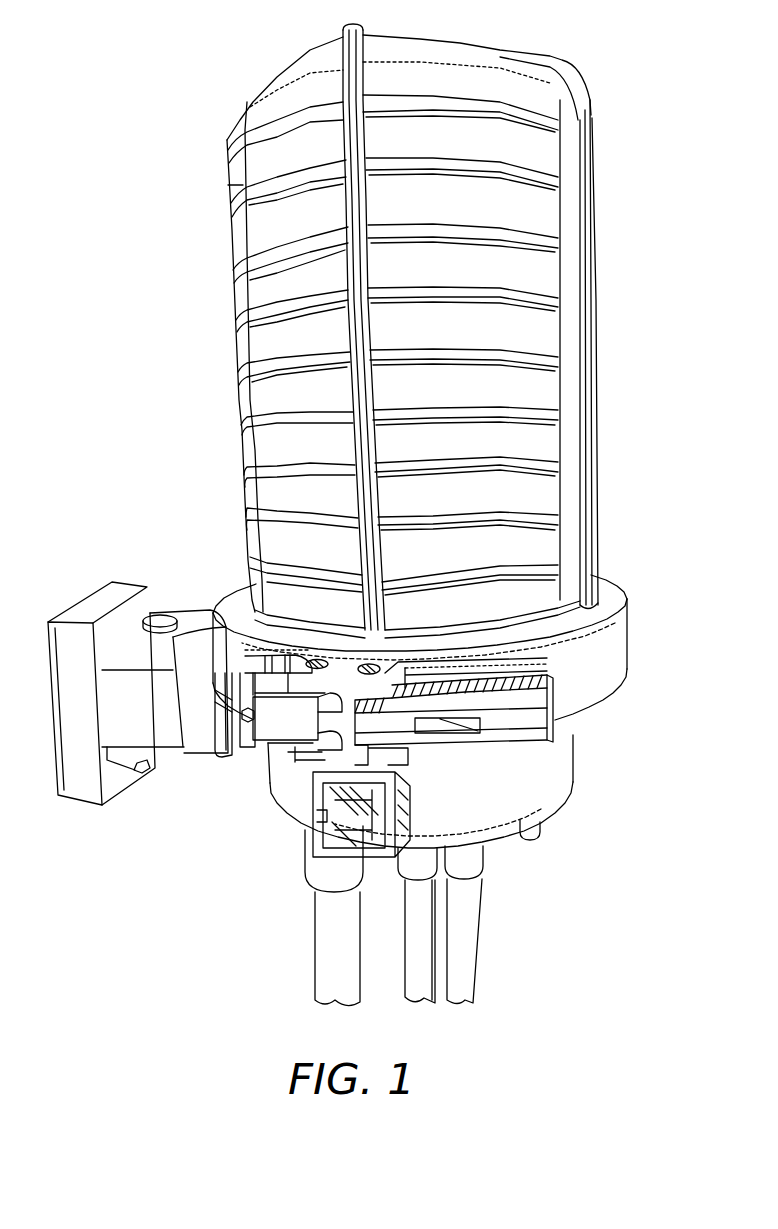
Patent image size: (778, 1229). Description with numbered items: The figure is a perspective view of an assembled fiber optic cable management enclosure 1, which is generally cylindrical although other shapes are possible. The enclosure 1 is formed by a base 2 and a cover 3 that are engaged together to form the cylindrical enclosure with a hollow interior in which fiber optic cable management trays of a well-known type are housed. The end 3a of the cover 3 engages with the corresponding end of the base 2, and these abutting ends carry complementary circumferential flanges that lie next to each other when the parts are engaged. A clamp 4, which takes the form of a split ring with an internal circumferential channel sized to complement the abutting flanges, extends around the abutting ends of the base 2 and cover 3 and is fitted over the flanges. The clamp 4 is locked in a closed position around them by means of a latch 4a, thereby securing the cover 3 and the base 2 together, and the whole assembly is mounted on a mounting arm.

The fiber optic cable management enclosure 1 is at (160, 90).
The base 2 is at (477, 796).
The cover 3 is at (424, 216).
The end of the cover 3a is at (550, 636).
The clamp 4 is at (608, 651).
The latch 4a is at (303, 735).